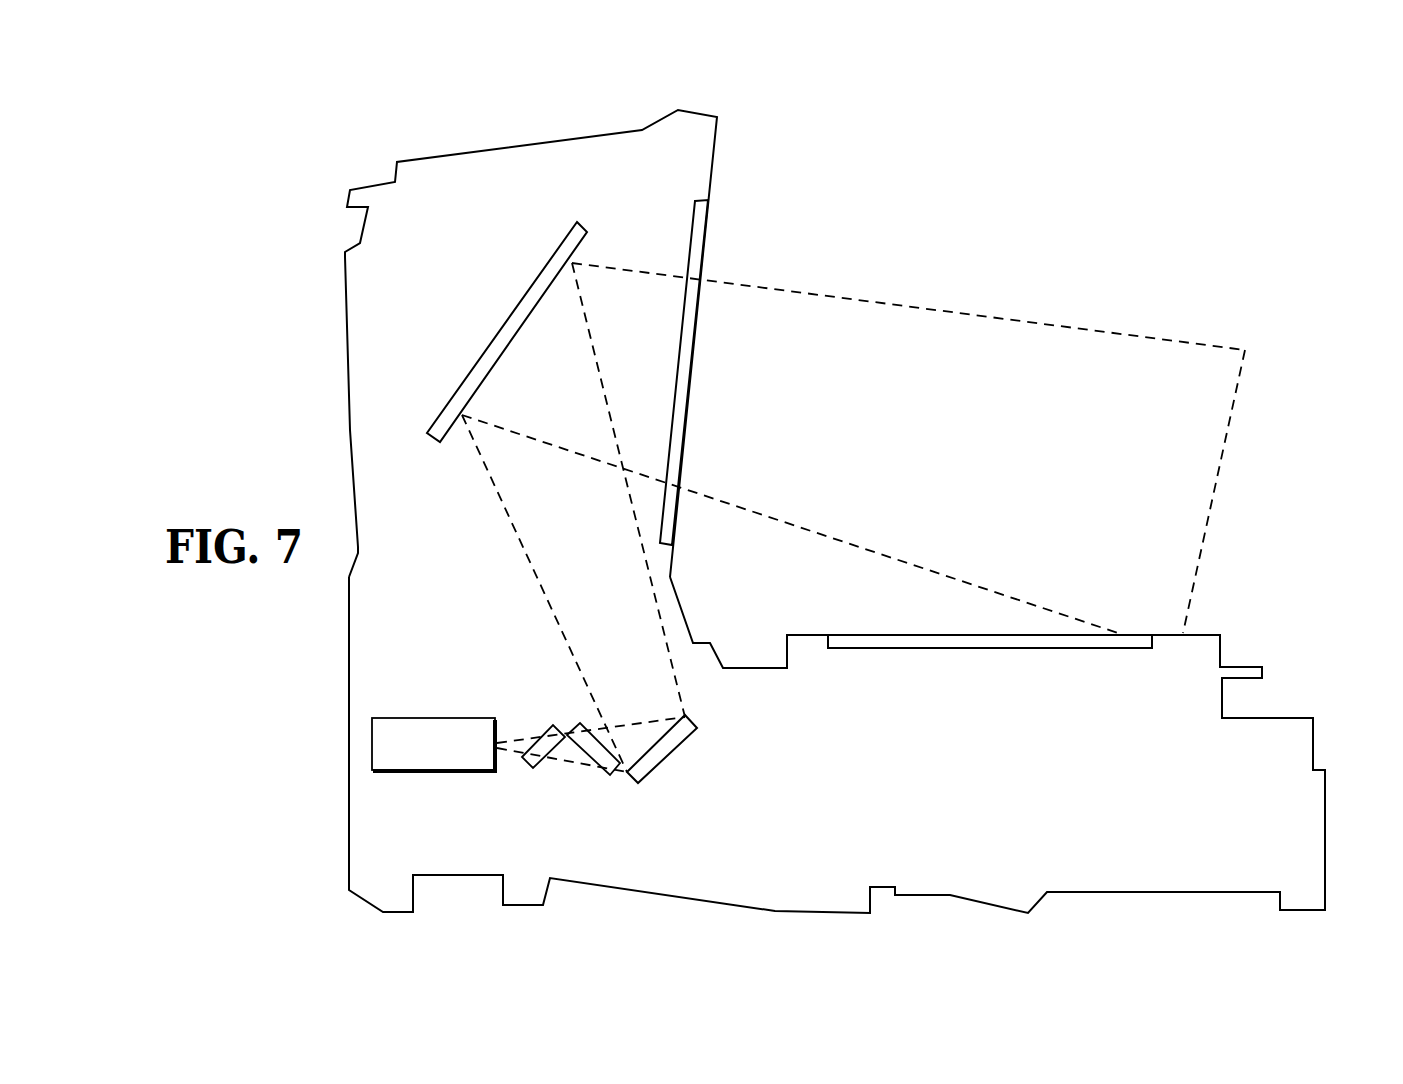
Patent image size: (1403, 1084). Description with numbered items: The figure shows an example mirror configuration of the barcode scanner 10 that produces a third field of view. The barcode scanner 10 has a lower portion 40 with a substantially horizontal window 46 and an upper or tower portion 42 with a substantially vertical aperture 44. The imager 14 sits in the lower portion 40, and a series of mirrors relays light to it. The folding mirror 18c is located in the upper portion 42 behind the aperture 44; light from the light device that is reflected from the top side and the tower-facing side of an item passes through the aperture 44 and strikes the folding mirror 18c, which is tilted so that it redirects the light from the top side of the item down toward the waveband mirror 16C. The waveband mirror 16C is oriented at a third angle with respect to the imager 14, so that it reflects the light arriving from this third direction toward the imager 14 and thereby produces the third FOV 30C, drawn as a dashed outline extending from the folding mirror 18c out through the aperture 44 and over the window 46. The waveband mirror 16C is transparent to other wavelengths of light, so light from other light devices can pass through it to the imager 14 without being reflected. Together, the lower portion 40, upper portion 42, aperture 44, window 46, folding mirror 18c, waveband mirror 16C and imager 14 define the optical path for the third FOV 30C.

The barcode scanner 10 is at (1270, 115).
The imager 14 is at (438, 772).
The waveband mirror 16C is at (673, 755).
The folding mirror 18c is at (512, 312).
The third FOV 30C is at (1138, 333).
The lower portion 40 is at (348, 822).
The upper portion 42 is at (343, 273).
The aperture 44 is at (707, 235).
The window 46 is at (930, 633).